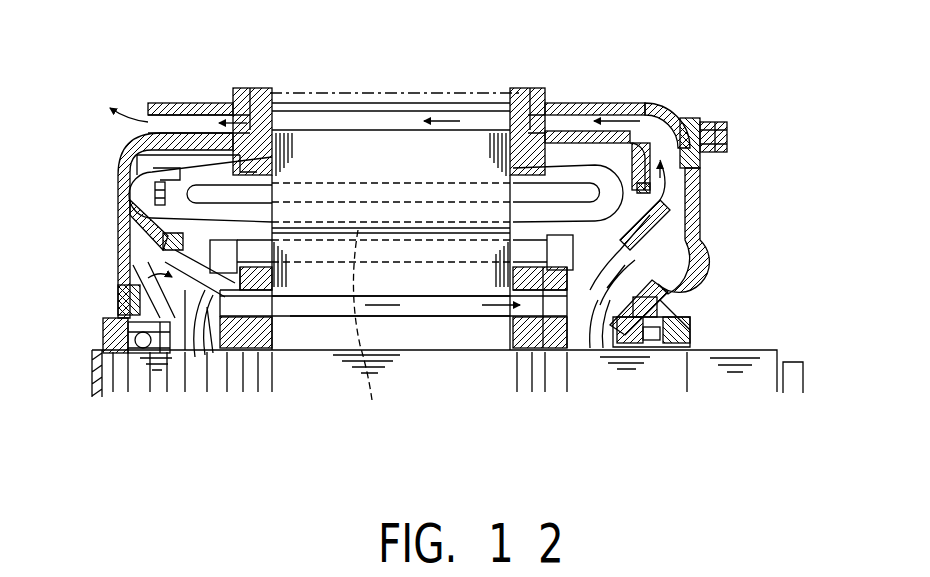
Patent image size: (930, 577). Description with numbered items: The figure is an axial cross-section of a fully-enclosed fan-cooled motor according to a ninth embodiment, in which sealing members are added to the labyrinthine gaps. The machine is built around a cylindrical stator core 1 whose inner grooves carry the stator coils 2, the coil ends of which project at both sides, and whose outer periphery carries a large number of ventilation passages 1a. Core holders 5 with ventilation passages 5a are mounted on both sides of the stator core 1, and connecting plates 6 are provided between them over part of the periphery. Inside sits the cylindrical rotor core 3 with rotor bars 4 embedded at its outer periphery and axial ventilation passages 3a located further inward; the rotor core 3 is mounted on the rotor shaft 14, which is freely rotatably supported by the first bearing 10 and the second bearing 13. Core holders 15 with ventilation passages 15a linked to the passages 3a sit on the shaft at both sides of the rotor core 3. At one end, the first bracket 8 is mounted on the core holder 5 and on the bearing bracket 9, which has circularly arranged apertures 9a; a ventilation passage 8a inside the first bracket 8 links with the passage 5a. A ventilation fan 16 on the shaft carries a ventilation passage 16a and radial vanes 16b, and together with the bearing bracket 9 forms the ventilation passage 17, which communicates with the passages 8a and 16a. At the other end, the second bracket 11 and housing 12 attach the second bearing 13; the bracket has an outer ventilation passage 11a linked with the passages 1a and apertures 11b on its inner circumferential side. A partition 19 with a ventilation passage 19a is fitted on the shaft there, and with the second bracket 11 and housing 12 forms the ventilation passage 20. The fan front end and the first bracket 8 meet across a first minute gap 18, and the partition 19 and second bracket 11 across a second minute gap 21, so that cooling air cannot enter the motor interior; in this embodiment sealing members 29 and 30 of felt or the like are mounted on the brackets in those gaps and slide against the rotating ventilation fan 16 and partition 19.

The stator core 1 is at (402, 142).
The ventilation passages 1a is at (348, 117).
The stator coils 2 is at (604, 163).
The rotor core 3 is at (450, 285).
The ventilation passages 3a is at (423, 305).
The rotor bars 4 is at (363, 326).
The core holders 5 is at (522, 88).
The ventilation passages 5a is at (512, 92).
The connecting plates 6 is at (455, 92).
The first bracket 8 is at (625, 102).
The ventilation passage 8a is at (573, 125).
The bearing bracket 9 is at (702, 221).
The apertures 9a is at (702, 252).
The first bearing 10 is at (650, 350).
The second bracket 11 is at (120, 160).
The ventilation passage 11a is at (182, 122).
The apertures 11b is at (122, 247).
The housing 12 is at (114, 311).
The second bearing 13 is at (134, 357).
The rotor shaft 14 is at (344, 375).
The core holders 15 is at (521, 315).
The ventilation passages 15a is at (504, 300).
The ventilation fan 16 is at (598, 280).
The ventilation passage 16a is at (557, 300).
The radial vanes 16b is at (703, 197).
The ventilation passage 17 is at (612, 300).
The first minute gap 18 is at (712, 160).
The partition 19 is at (196, 355).
The ventilation passage 19a is at (227, 355).
The ventilation passage 20 is at (180, 357).
The second minute gap 21 is at (142, 240).
The sealing member 29 is at (727, 130).
The sealing member 30 is at (133, 207).